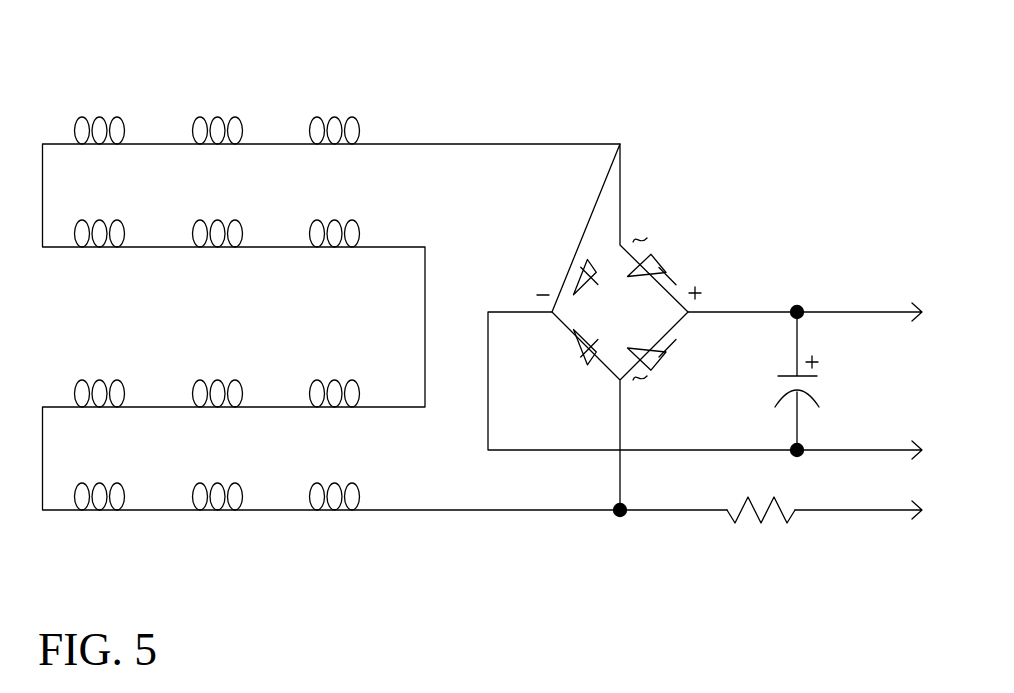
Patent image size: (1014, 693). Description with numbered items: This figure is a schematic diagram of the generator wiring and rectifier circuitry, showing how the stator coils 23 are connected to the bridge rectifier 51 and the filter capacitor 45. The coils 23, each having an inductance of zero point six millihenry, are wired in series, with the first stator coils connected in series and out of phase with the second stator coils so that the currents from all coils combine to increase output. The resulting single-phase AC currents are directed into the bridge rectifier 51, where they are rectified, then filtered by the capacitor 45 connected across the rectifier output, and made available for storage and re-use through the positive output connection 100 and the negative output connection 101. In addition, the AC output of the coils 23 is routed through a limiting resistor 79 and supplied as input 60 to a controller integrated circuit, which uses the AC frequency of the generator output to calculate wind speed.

The stator coils 23 is at (233, 117).
The bridge rectifier 51 is at (657, 258).
The filter capacitor 45 is at (810, 386).
The limiting resistor 79 is at (751, 527).
The positive output connection 100 is at (823, 312).
The negative output connection 101 is at (723, 387).
The input 60 is at (784, 510).